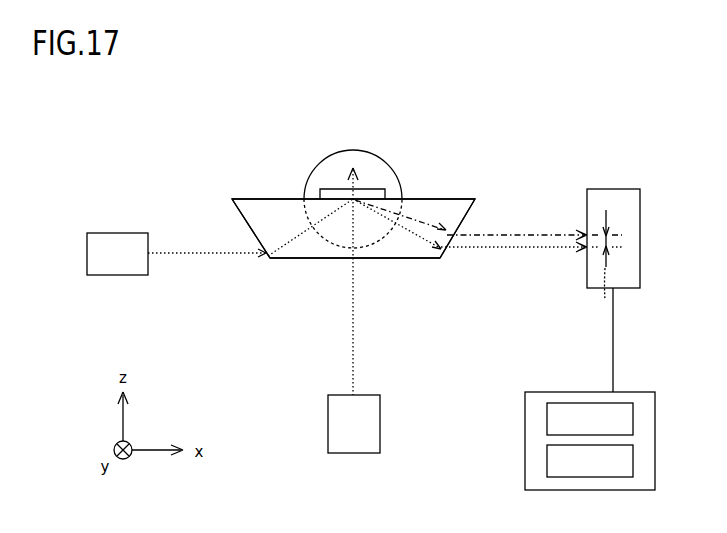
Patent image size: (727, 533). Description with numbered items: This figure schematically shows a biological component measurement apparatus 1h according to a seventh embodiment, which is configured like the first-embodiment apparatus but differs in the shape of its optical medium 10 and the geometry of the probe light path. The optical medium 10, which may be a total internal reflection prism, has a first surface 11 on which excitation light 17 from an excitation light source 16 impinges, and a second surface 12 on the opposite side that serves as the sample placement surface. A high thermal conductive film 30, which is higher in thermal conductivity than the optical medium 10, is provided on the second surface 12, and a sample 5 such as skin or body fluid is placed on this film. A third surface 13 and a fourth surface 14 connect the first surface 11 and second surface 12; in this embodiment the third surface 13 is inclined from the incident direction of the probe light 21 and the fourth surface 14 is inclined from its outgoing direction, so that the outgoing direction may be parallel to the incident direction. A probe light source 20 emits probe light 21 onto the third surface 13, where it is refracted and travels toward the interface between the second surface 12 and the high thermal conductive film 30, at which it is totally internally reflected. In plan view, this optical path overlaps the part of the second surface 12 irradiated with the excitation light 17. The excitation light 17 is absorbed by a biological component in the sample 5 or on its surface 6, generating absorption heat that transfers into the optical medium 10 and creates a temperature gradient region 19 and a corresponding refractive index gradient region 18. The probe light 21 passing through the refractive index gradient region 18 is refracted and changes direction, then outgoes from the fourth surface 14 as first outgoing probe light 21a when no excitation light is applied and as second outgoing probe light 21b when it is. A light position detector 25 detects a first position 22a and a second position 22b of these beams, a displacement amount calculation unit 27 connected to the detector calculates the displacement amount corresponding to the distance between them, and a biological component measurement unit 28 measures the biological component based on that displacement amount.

The biological component measurement apparatus 1h is at (632, 108).
The sample 5 is at (331, 133).
The surface of sample 6 is at (305, 212).
The high thermal conductive film 30 is at (375, 188).
The optical medium 10 is at (294, 248).
The first surface 11 is at (433, 259).
The second surface 12 is at (445, 198).
The third surface 13 is at (240, 212).
The fourth surface 14 is at (475, 212).
The excitation light source 16 is at (381, 428).
The excitation light 17 is at (356, 332).
The refractive index gradient region 18 is at (335, 223).
The temperature gradient region 19 is at (335, 223).
The probe light source 20 is at (126, 232).
The probe light 21 is at (195, 256).
The first outgoing probe light 21a is at (522, 254).
The second outgoing probe light 21b is at (527, 229).
The first position 22a is at (586, 250).
The second position 22b is at (586, 228).
The light position detector 25 is at (620, 188).
The displacement amount calculation unit 27 is at (634, 417).
The biological component measurement unit 28 is at (634, 462).